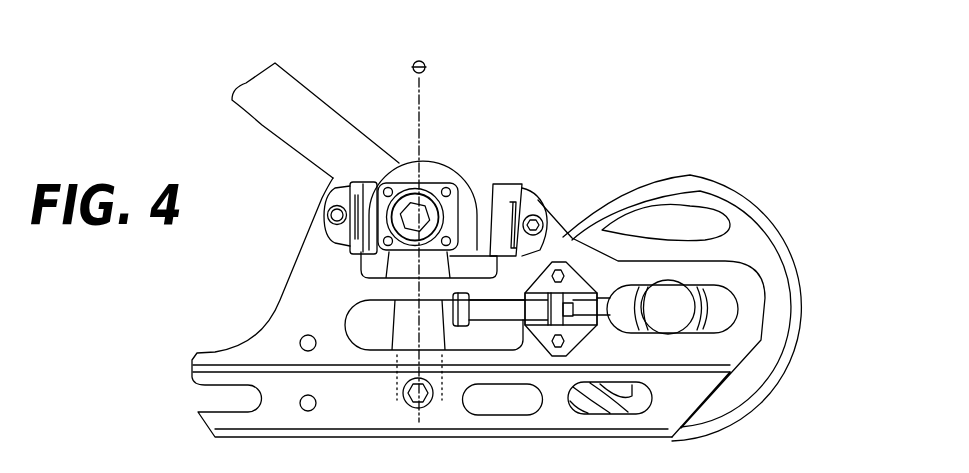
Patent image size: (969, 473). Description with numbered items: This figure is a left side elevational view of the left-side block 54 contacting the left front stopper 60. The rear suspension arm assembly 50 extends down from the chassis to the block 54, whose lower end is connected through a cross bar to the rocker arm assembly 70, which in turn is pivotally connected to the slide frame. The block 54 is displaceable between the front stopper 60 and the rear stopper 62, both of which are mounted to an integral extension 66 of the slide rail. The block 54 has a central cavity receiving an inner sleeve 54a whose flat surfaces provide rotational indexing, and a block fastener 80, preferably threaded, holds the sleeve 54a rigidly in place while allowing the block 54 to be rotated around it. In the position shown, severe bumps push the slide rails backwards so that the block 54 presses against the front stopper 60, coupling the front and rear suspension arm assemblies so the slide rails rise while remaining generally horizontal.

The rear suspension arm assembly 50 is at (305, 83).
The block 54 is at (449, 178).
The inner sleeve 54a is at (425, 192).
The front stopper 60 is at (370, 197).
The rear stopper 62 is at (506, 186).
The integral extension 66 is at (318, 239).
The rocker arm assembly 70 is at (400, 263).
The block fastener 80 is at (410, 213).